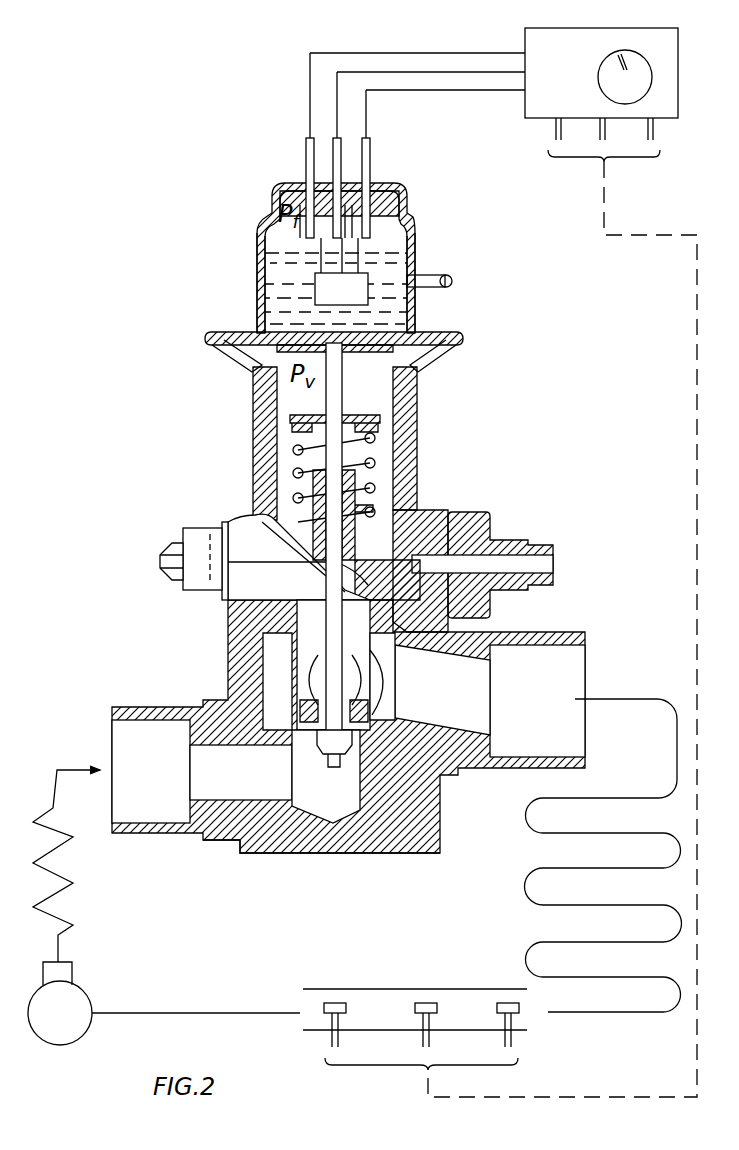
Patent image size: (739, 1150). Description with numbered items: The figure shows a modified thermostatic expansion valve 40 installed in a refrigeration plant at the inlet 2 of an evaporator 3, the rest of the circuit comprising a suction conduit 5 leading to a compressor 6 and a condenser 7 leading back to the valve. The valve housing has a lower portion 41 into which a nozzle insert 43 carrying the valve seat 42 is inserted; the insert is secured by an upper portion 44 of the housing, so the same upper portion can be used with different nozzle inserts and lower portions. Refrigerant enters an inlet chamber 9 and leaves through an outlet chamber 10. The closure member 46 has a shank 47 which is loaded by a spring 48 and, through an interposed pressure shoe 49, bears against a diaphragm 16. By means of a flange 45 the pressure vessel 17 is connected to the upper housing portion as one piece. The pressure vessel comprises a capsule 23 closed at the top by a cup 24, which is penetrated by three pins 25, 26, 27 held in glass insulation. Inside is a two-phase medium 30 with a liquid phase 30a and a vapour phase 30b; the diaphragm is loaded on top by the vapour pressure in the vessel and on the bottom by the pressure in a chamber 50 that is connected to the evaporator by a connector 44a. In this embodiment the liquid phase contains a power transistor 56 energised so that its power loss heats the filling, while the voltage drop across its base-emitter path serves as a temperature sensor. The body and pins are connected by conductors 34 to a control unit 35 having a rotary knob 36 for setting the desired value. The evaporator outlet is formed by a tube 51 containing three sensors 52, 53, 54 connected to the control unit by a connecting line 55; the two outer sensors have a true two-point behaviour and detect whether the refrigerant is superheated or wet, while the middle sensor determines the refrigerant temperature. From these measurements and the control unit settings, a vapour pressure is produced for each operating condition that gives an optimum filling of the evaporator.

The inlet 2 is at (608, 699).
The evaporator 3 is at (665, 833).
The suction conduit 5 is at (217, 1013).
The compressor 6 is at (72, 1003).
The condenser 7 is at (73, 887).
The inlet chamber 9 is at (160, 800).
The outlet chamber 10 is at (555, 668).
The diaphragm 16 is at (300, 333).
The pressure vessel 17 is at (377, 225).
The capsule 23 is at (414, 324).
The cup 24 is at (407, 205).
The pin 25 is at (306, 150).
The pin 26 is at (333, 150).
The pin 27 is at (370, 150).
The two-phase medium 30 is at (397, 258).
The liquid phase 30a is at (390, 304).
The vapour phase 30b is at (384, 226).
The conductors 34 is at (471, 53).
The control unit 35 is at (568, 46).
The rotary knob 36 is at (628, 53).
The thermostatic expansion valve 40 is at (338, 860).
The lower portion 41 is at (266, 820).
The valve seat 42 is at (304, 728).
The nozzle insert 43 is at (363, 650).
The upper portion 44 is at (405, 408).
The connector 44a is at (545, 562).
The flange 45 is at (233, 355).
The closure member 46 is at (340, 748).
The shank 47 is at (330, 455).
The spring 48 is at (376, 438).
The pressure shoe 49 is at (358, 345).
The chamber 50 is at (283, 388).
The tube 51 is at (415, 1004).
The sensor 52 is at (340, 1003).
The sensor 53 is at (432, 1003).
The sensor 54 is at (510, 1003).
The connecting line 55 is at (568, 1097).
The power transistor 56 is at (333, 290).